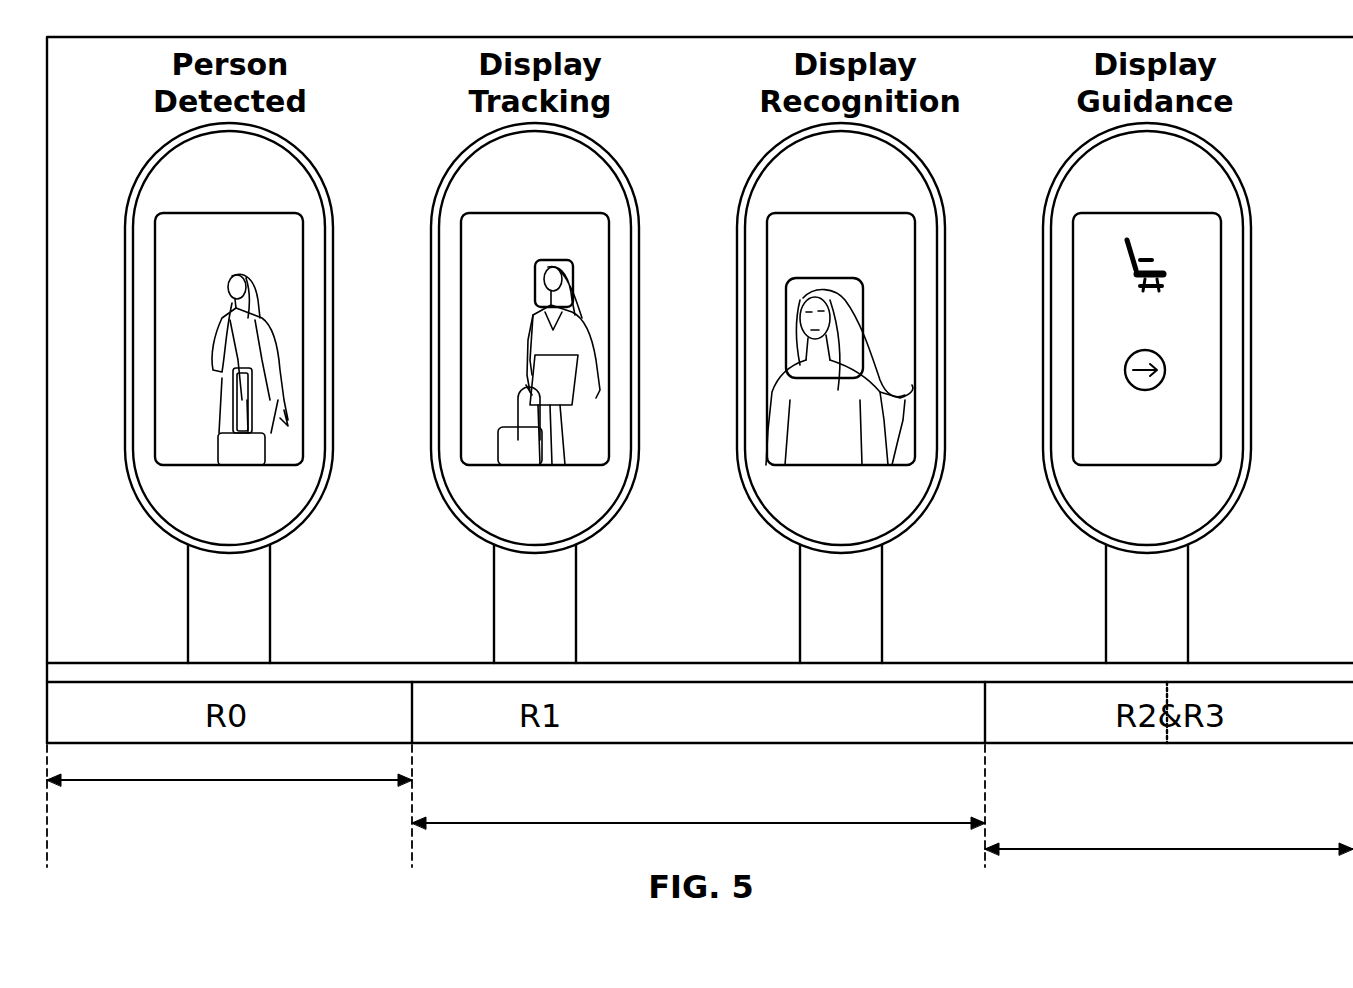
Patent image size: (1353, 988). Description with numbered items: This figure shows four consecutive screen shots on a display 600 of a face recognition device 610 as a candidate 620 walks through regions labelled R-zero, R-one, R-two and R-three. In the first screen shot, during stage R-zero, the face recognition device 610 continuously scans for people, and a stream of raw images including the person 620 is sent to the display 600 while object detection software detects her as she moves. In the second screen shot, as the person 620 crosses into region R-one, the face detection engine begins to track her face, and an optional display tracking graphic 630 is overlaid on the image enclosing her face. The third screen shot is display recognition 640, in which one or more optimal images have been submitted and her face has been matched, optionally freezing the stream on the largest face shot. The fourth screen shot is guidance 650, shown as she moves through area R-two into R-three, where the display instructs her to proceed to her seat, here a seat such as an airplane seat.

The display 600 is at (125, 243).
The face recognition device 610 is at (188, 588).
The candidate 620 is at (228, 292).
The display tracking graphic 630 is at (535, 275).
The display recognition 640 is at (786, 318).
The guidance 650 is at (1260, 213).